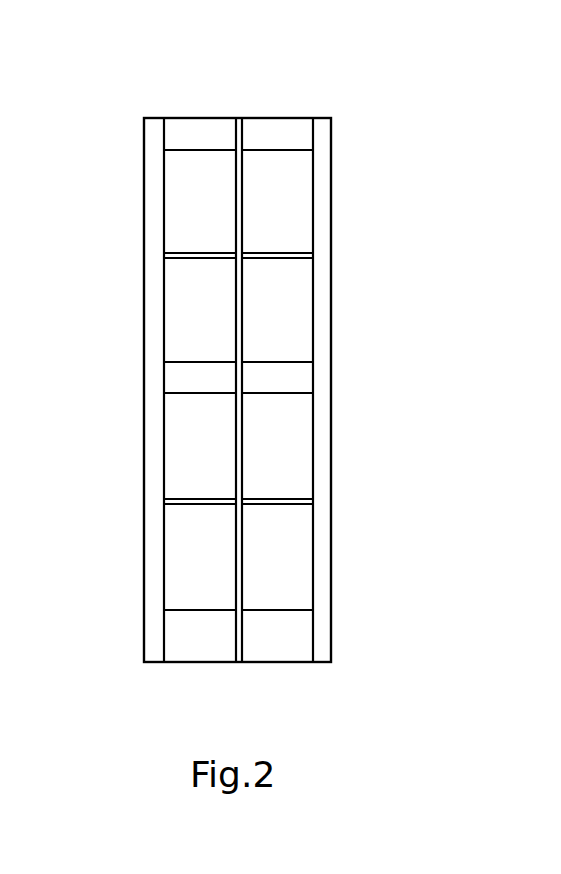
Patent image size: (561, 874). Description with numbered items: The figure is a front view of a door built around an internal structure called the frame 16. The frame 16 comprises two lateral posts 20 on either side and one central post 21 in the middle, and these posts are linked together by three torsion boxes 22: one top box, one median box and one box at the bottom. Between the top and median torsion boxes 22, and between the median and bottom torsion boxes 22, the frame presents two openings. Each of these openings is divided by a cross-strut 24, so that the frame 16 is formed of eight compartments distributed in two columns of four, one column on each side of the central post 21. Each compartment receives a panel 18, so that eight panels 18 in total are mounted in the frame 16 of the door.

The frame 16 is at (323, 130).
The panel 18 is at (182, 550).
The lateral post 20 is at (154, 380).
The central post 21 is at (238, 577).
The torsion box 22 is at (197, 128).
The cross-strut 24 is at (205, 252).